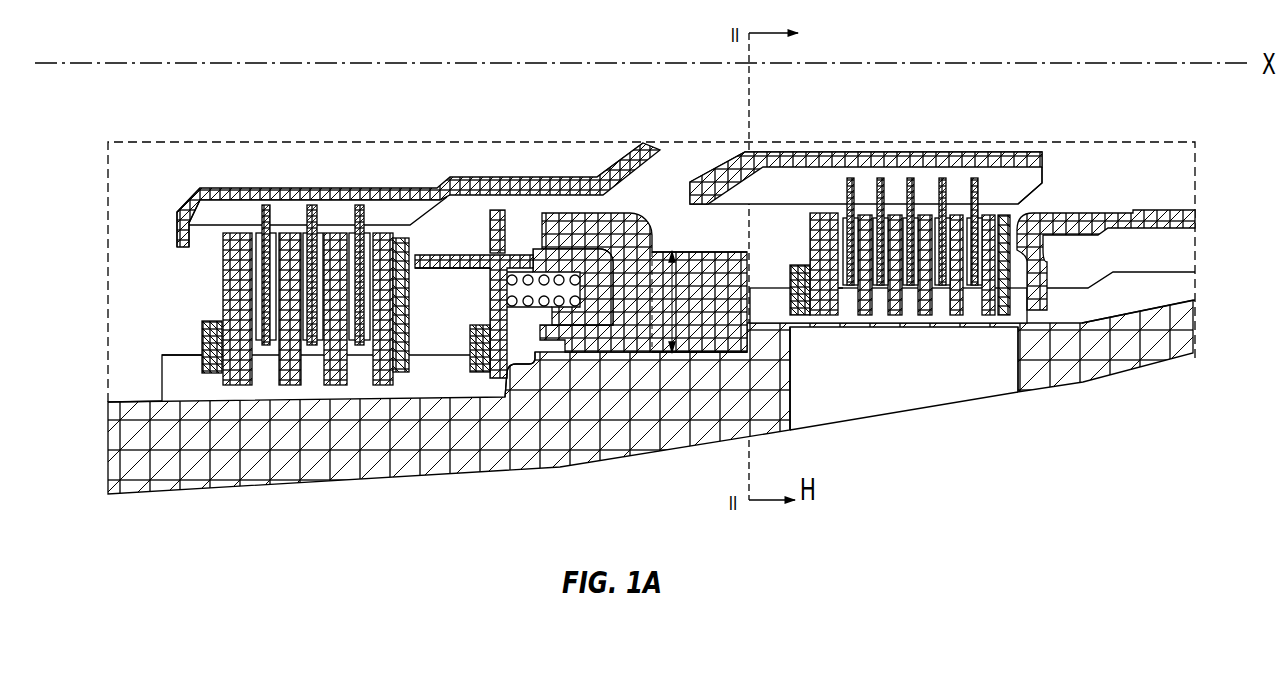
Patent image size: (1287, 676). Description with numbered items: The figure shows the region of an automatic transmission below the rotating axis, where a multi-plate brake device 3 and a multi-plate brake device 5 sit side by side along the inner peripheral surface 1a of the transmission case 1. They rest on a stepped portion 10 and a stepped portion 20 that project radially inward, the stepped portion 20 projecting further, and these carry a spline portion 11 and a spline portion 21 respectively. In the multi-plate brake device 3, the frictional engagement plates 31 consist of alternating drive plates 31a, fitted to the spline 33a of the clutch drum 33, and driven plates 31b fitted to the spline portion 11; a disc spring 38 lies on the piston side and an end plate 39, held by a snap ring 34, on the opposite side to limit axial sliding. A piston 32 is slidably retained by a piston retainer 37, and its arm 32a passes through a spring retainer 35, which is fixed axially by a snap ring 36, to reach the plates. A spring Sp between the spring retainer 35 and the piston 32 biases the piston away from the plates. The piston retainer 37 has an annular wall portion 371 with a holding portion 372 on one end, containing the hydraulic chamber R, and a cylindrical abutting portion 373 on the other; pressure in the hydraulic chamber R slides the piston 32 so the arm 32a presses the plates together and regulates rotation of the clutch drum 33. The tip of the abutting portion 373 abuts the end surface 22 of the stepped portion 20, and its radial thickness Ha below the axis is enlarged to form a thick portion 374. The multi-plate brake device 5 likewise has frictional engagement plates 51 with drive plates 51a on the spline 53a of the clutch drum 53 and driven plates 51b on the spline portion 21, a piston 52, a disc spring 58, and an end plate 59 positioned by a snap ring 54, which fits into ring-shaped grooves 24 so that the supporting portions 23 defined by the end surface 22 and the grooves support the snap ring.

The transmission case 1 is at (106, 471).
The inner peripheral surface 1a is at (106, 401).
The multi-plate brake device 3 is at (362, 220).
The multi-plate brake device 5 is at (962, 174).
The stepped portion 10 is at (158, 361).
The spline portion 11 is at (183, 353).
The stepped portion 20 is at (1172, 271).
The spline portion 21 is at (975, 325).
The end surface 22 is at (722, 356).
The supporting portions 23 is at (763, 287).
The ring-shaped grooves 24 is at (818, 305).
The frictional engagement plates 31 is at (327, 209).
The drive plates 31a is at (267, 232).
The driven plates 31b is at (334, 232).
The piston 32 is at (520, 240).
The arm 32a is at (440, 269).
The clutch drum 33 is at (560, 177).
The spline 33a is at (190, 216).
The snap ring 34 is at (206, 320).
The spring retainer 35 is at (495, 209).
The snap ring 36 is at (469, 372).
The piston retainer 37 is at (645, 205).
The annular wall portion 371 is at (672, 249).
The holding portion 372 is at (623, 165).
The abutting portion 373 is at (733, 250).
The thick portion 374 is at (792, 350).
The disc spring 38 is at (401, 237).
The end plate 39 is at (230, 232).
The frictional engagement plates 51 is at (919, 174).
The drive plates 51a is at (975, 102).
The driven plates 51b is at (940, 214).
The piston 52 is at (1181, 210).
The clutch drum 53 is at (1036, 165).
The spline 53a is at (1028, 197).
The snap ring 54 is at (800, 264).
The disc spring 58 is at (1004, 214).
The end plate 59 is at (834, 212).
The spring Sp is at (535, 308).
The hydraulic chamber R is at (613, 353).
The radial thickness Ha is at (690, 302).